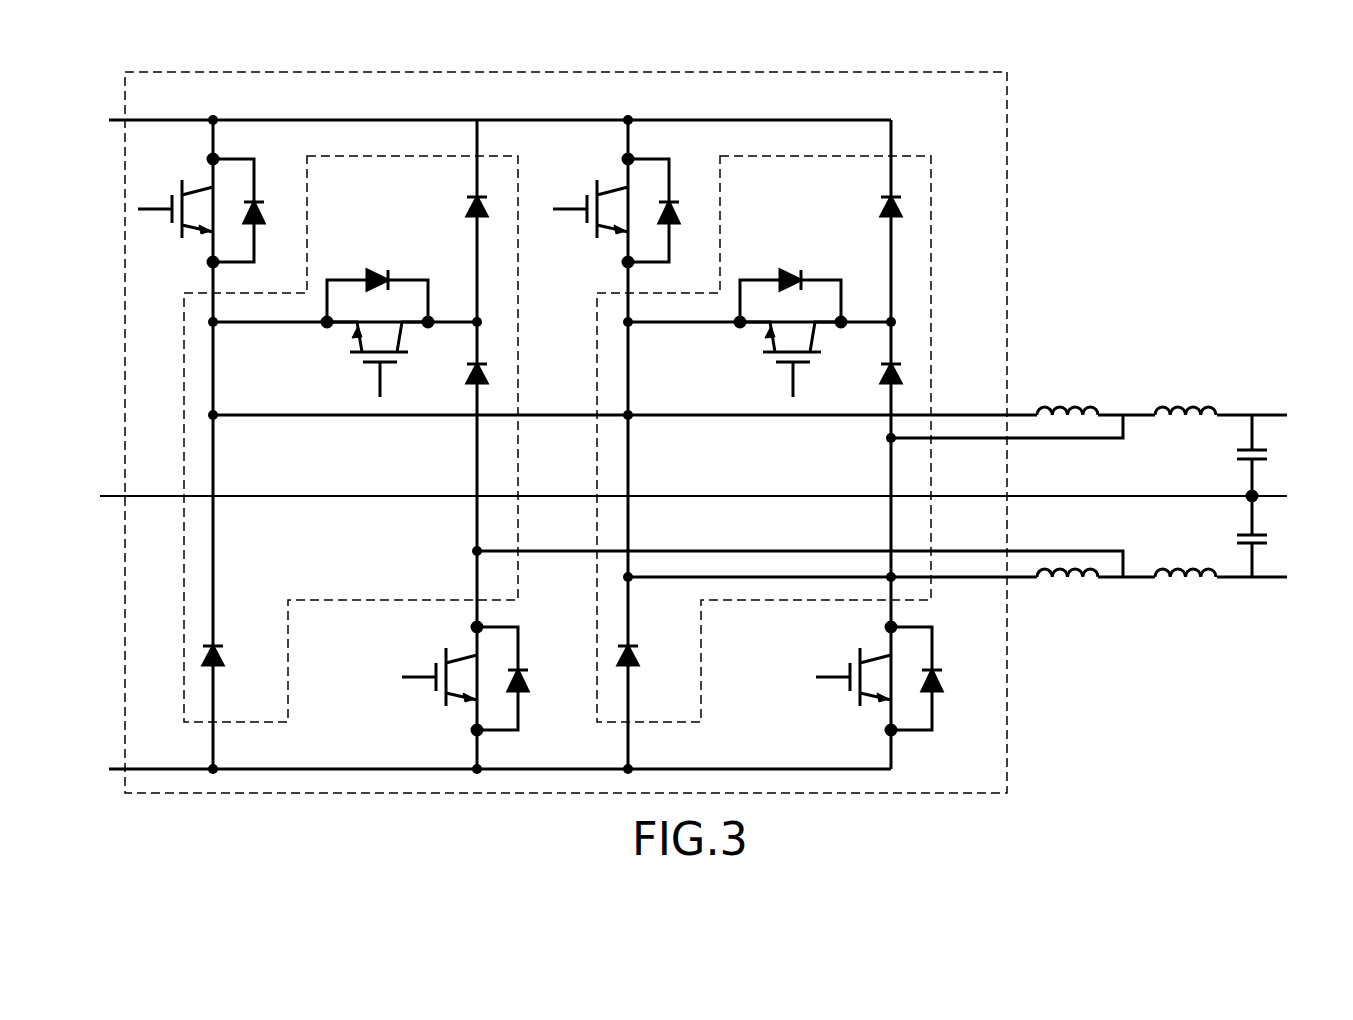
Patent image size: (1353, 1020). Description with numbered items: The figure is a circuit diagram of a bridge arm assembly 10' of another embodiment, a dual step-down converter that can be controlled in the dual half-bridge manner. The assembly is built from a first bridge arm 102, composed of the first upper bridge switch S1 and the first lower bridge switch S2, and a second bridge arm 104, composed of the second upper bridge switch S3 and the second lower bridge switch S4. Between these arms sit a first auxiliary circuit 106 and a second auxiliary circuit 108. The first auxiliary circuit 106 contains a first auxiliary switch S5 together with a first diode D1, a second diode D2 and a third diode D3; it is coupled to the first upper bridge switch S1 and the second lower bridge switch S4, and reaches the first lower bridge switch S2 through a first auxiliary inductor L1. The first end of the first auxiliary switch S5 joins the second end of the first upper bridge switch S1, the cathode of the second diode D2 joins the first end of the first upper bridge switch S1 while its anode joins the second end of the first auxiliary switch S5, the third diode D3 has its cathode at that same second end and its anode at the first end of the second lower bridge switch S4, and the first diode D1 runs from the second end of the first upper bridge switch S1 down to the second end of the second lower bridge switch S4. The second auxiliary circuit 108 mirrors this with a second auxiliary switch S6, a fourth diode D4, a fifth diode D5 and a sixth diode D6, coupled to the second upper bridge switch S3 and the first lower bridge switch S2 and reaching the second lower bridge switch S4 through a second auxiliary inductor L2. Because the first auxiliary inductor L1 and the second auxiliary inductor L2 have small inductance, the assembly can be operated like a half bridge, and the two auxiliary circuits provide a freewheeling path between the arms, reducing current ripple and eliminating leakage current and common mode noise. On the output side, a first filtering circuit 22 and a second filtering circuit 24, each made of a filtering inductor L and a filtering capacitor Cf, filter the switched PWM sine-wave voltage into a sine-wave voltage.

The bridge arm assembly 10' is at (619, 432).
The first bridge arm 102 is at (305, 110).
The second bridge arm 104 is at (575, 110).
The first auxiliary circuit 106 is at (507, 172).
The second auxiliary circuit 108 is at (915, 160).
The first filtering circuit 22 is at (1163, 443).
The second filtering circuit 24 is at (1162, 646).
The first upper bridge switch S1 is at (217, 210).
The first lower bridge switch S2 is at (896, 678).
The second upper bridge switch S3 is at (631, 210).
The second lower bridge switch S4 is at (483, 678).
The first auxiliary switch S5 is at (345, 318).
The second auxiliary switch S6 is at (759, 318).
The first diode D1 is at (232, 634).
The second diode D2 is at (458, 200).
The third diode D3 is at (459, 383).
The fourth diode D4 is at (648, 639).
The fifth diode D5 is at (869, 200).
The sixth diode D6 is at (873, 384).
The first auxiliary inductor L1 is at (1067, 395).
The second auxiliary inductor L2 is at (1067, 590).
The filtering inductor L is at (1185, 494).
The filtering capacitor Cf is at (1271, 496).